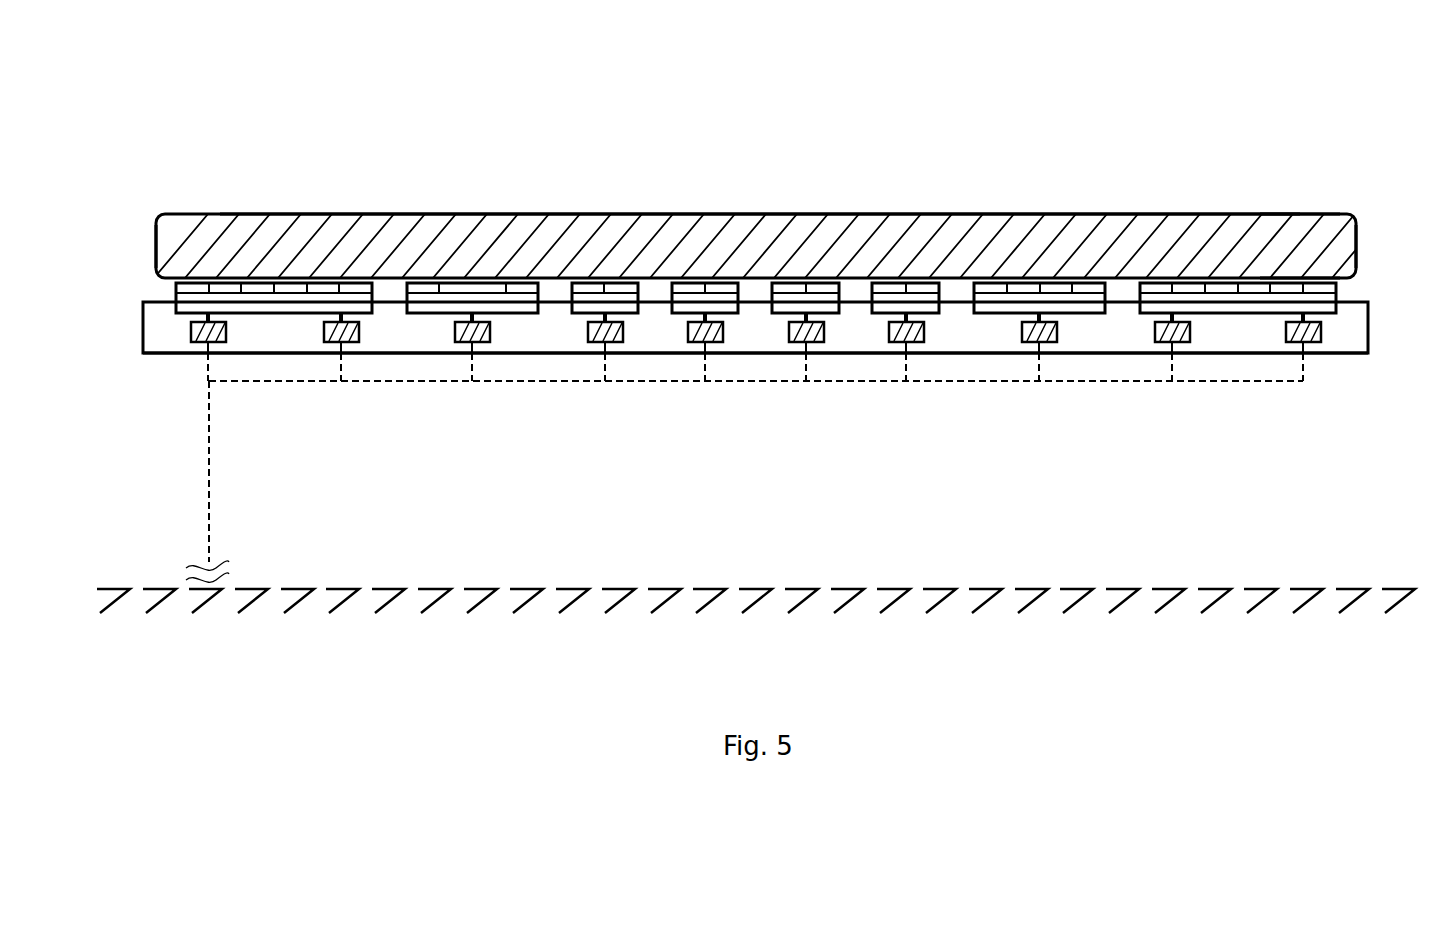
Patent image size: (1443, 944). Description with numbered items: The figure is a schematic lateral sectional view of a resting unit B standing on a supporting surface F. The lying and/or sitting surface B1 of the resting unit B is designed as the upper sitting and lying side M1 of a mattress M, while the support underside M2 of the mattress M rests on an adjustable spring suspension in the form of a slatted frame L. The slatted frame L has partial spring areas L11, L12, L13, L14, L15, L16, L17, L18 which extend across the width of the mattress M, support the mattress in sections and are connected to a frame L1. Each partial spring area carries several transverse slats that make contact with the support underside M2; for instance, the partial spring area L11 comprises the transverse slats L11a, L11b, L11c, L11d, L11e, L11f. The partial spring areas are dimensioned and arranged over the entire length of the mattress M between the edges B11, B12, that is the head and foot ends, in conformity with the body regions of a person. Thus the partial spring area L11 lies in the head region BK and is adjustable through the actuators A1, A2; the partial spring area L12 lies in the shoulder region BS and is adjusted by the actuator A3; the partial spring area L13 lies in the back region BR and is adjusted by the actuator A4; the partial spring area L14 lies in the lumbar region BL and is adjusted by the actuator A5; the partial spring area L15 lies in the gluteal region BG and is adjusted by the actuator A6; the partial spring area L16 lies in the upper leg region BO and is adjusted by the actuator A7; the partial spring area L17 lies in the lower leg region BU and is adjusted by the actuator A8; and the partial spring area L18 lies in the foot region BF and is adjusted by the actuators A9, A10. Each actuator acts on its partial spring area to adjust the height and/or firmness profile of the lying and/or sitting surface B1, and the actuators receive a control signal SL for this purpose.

The resting unit B is at (982, 225).
The lying and/or sitting surface B1 is at (1003, 220).
The edge (head end) B11 is at (156, 248).
The edge (foot end) B12 is at (1350, 246).
The mattress M is at (1318, 232).
The upper sitting and lying side M1 is at (1343, 215).
The support underside M2 is at (1341, 279).
The head region BK is at (270, 240).
The shoulder region BS is at (470, 240).
The back region BR is at (605, 240).
The lumbar region BL is at (708, 240).
The gluteal region BG is at (812, 240).
The upper leg region BO is at (898, 240).
The lower leg region BU is at (1055, 240).
The foot region BF is at (1235, 240).
The slatted frame L is at (143, 308).
The frame L1 is at (143, 341).
The first partial spring area L11 is at (275, 291).
The transverse slat L11a is at (188, 292).
The transverse slat L11b is at (227, 292).
The transverse slat L11c is at (257, 292).
The transverse slat L11d is at (295, 292).
The transverse slat L11e is at (325, 292).
The transverse slat L11f is at (360, 292).
The second partial spring area L12 is at (503, 300).
The third partial spring area L13 is at (632, 300).
The fourth partial spring area L14 is at (731, 300).
The fifth partial spring area L15 is at (831, 300).
The sixth partial spring area L16 is at (932, 300).
The seventh partial spring area L17 is at (1070, 300).
The eighth partial spring area L18 is at (1243, 300).
The first actuator A1 is at (193, 343).
The second actuator A2 is at (324, 343).
The third actuator A3 is at (457, 343).
The fourth actuator A4 is at (591, 343).
The fifth actuator A5 is at (692, 343).
The sixth actuator A6 is at (792, 343).
The seventh actuator A7 is at (893, 343).
The eighth actuator A8 is at (1027, 343).
The ninth actuator A9 is at (1159, 343).
The tenth actuator A10 is at (1290, 343).
The control signal SL is at (222, 532).
The supporting surface F is at (1300, 592).